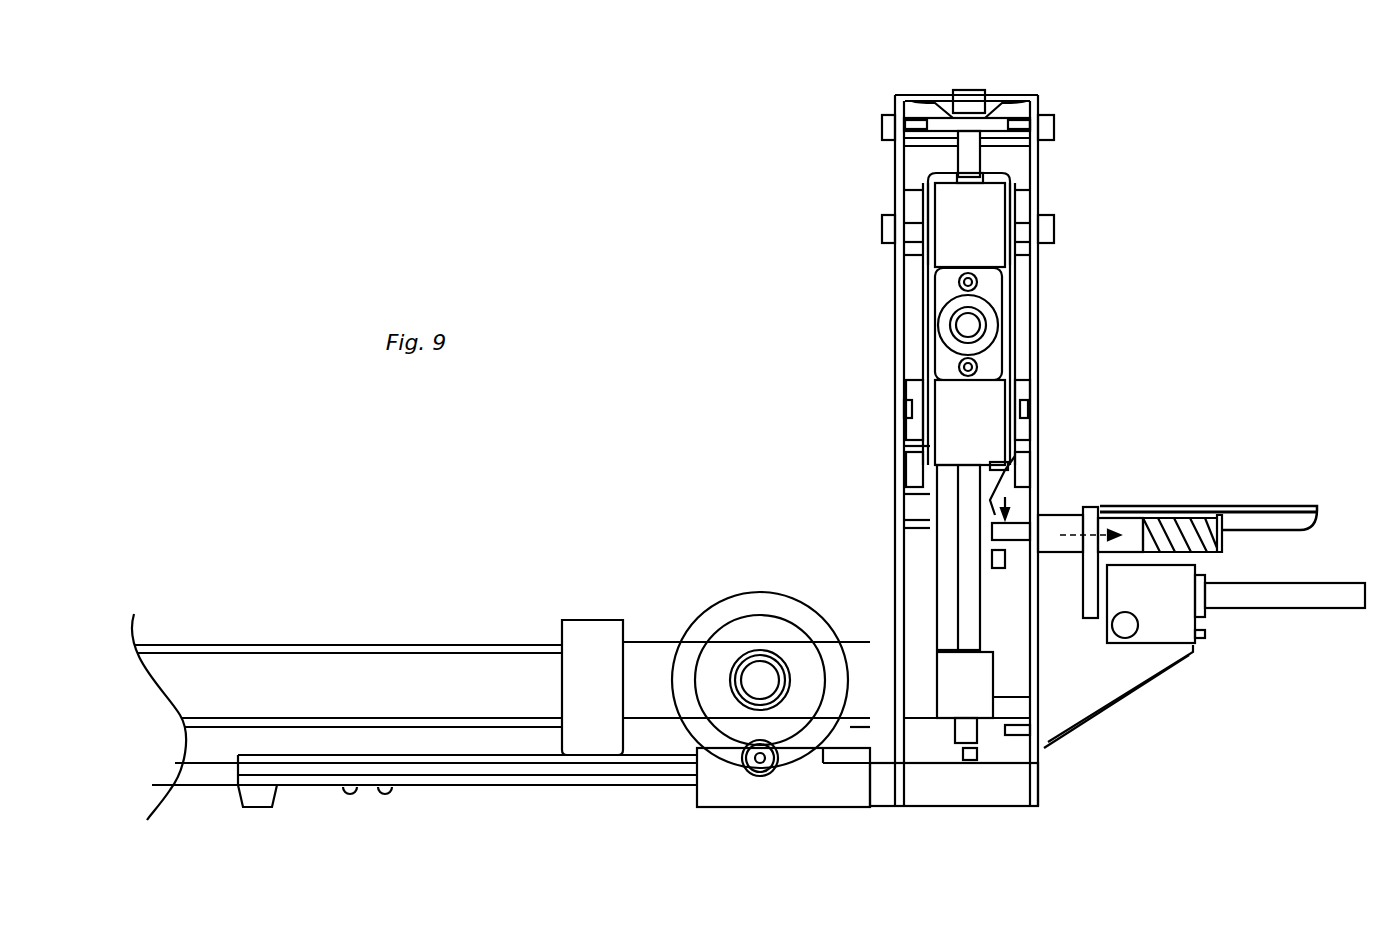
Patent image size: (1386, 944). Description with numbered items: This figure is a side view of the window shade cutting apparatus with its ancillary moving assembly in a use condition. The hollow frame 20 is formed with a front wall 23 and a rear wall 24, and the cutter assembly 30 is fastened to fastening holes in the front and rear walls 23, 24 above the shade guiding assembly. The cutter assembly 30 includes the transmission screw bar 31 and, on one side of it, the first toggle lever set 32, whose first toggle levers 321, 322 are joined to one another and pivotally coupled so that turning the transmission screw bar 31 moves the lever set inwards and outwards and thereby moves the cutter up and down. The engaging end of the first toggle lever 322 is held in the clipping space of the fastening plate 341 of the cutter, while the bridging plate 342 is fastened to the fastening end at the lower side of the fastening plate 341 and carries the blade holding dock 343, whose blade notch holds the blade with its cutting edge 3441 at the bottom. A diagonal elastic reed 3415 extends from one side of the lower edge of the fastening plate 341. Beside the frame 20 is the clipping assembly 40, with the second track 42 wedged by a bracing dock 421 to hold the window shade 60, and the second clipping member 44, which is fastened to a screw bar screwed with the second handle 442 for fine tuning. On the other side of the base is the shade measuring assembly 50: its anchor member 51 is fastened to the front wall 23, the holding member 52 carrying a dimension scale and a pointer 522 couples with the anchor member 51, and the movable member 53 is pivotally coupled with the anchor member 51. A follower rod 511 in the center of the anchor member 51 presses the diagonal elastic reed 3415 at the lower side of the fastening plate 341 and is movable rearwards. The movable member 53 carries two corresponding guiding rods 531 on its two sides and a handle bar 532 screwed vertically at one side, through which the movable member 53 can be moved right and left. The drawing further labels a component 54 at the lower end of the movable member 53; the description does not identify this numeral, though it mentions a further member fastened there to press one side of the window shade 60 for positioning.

The hollow frame 20 is at (980, 68).
The front wall 23 is at (1037, 181).
The rear wall 24 is at (897, 167).
The cutter assembly 30 is at (1012, 273).
The transmission screw bar 31 is at (982, 325).
The first toggle lever set 32 is at (910, 263).
The first toggle lever 321 is at (985, 243).
The first toggle lever 322 is at (990, 410).
The fastening plate 341 is at (920, 410).
The bridging plate 342 is at (920, 482).
The diagonal elastic reed 3415 is at (1012, 457).
The blade holding dock 343 is at (1010, 735).
The cutting edge 3441 is at (990, 628).
The clipping assembly 40 is at (399, 590).
The second track 42 is at (468, 787).
The bracing dock 421 is at (590, 632).
The second clipping member 44 is at (870, 655).
The second handle 442 is at (758, 770).
The shade measuring assembly 50 is at (1165, 448).
The anchor member 51 is at (1055, 520).
The follower rod 511 is at (983, 547).
The holding member 52 is at (1283, 520).
The pointer 522 is at (1182, 508).
The movable member 53 is at (1182, 635).
The guiding rods 531 is at (1308, 600).
The handle bar 532 is at (1128, 627).
The inclined plate 54 is at (1007, 697).
The window shade 60 is at (950, 698).